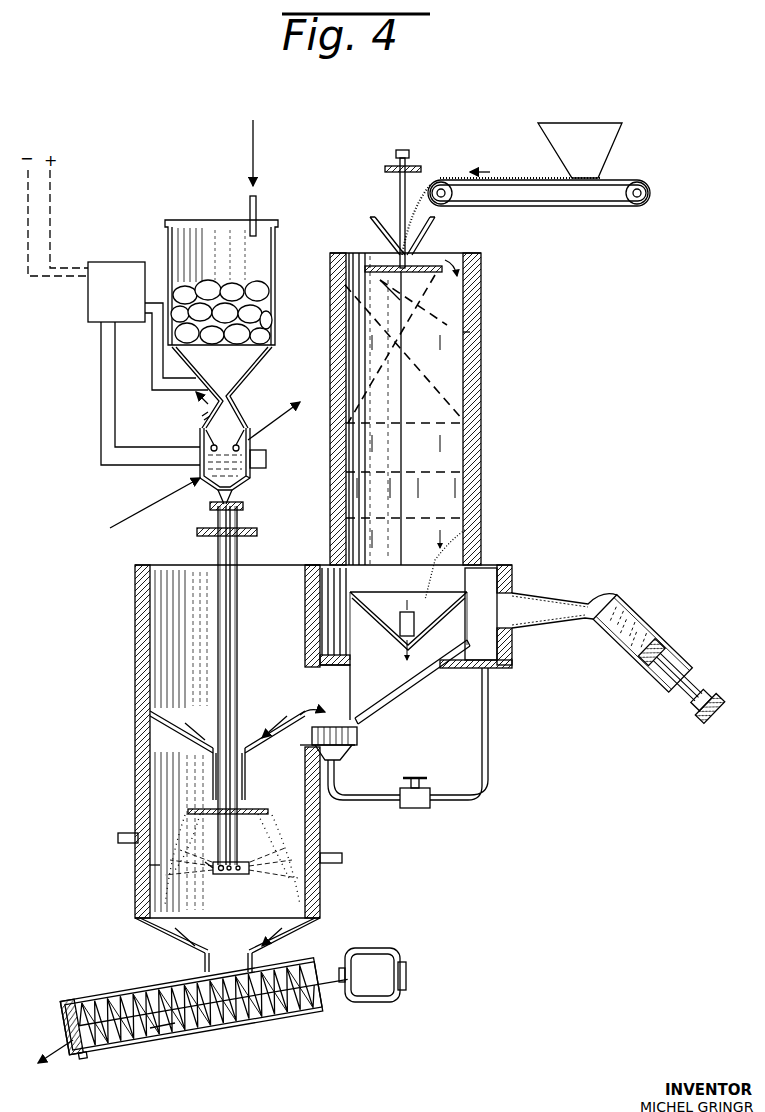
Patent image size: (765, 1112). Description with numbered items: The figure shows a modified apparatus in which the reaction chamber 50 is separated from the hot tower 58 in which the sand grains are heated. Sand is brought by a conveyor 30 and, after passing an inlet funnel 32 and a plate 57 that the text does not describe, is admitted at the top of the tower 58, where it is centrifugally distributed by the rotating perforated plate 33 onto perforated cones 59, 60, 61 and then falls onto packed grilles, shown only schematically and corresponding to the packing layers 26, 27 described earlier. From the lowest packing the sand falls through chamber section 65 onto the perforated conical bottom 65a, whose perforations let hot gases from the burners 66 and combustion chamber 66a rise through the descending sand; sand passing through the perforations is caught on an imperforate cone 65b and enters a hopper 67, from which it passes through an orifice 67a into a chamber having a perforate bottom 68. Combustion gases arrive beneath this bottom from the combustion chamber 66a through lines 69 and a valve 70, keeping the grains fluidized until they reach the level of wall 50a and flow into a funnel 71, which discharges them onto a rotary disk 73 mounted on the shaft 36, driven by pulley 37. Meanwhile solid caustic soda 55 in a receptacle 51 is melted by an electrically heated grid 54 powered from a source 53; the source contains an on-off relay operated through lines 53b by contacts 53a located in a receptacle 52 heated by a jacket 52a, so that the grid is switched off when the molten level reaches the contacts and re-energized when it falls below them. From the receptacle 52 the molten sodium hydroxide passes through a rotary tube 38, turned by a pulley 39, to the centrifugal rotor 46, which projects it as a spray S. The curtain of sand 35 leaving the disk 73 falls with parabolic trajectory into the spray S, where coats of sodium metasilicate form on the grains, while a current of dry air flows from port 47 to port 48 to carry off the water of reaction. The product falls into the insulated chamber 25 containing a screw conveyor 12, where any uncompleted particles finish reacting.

The screw conveyor 12 is at (178, 1030).
The insulated chamber 25 is at (200, 1032).
The packing layer 26 is at (445, 510).
The packing layer 27 is at (455, 478).
The conveyor 30 is at (540, 185).
The feed funnel 32 is at (378, 220).
The rotating plate 33 is at (385, 290).
The curtain of sand 35 is at (165, 860).
The rotary tube 36 is at (238, 605).
The pulley 37 is at (205, 536).
The rotary tube 38 is at (230, 646).
The pulley 39 is at (210, 507).
The centrifugal spinner 46 is at (236, 876).
The port 47 is at (336, 860).
The port 48 is at (118, 840).
The reaction chamber 50 is at (150, 782).
The wall 50a is at (318, 740).
The receptacle 51 is at (262, 252).
The receptacle 52 is at (232, 420).
The jacket 52a is at (250, 478).
The source 53 is at (117, 262).
The contacts 53a is at (212, 445).
The lines 53b is at (117, 383).
The electrically heated grid 54 is at (262, 360).
The solid caustic soda 55 is at (255, 300).
The distributor plate 57 is at (428, 268).
The tower 58 is at (481, 356).
The perforated cone 59 is at (445, 310).
The perforated cone 60 is at (462, 332).
The perforated cone 61 is at (462, 420).
The chamber section 65 is at (365, 540).
The perforated conical bottom 65a is at (345, 578).
The imperforate cone 65b is at (462, 534).
The burners 66 is at (662, 698).
The combustion chamber 66a is at (500, 635).
The hopper 67 is at (405, 675).
The orifice 67a is at (360, 730).
The perforate bottom 68 is at (345, 752).
The lines 69 is at (487, 745).
The valve 70 is at (415, 808).
The funnel 71 is at (170, 726).
The rotary disk 73 is at (250, 810).
The spray S is at (213, 870).